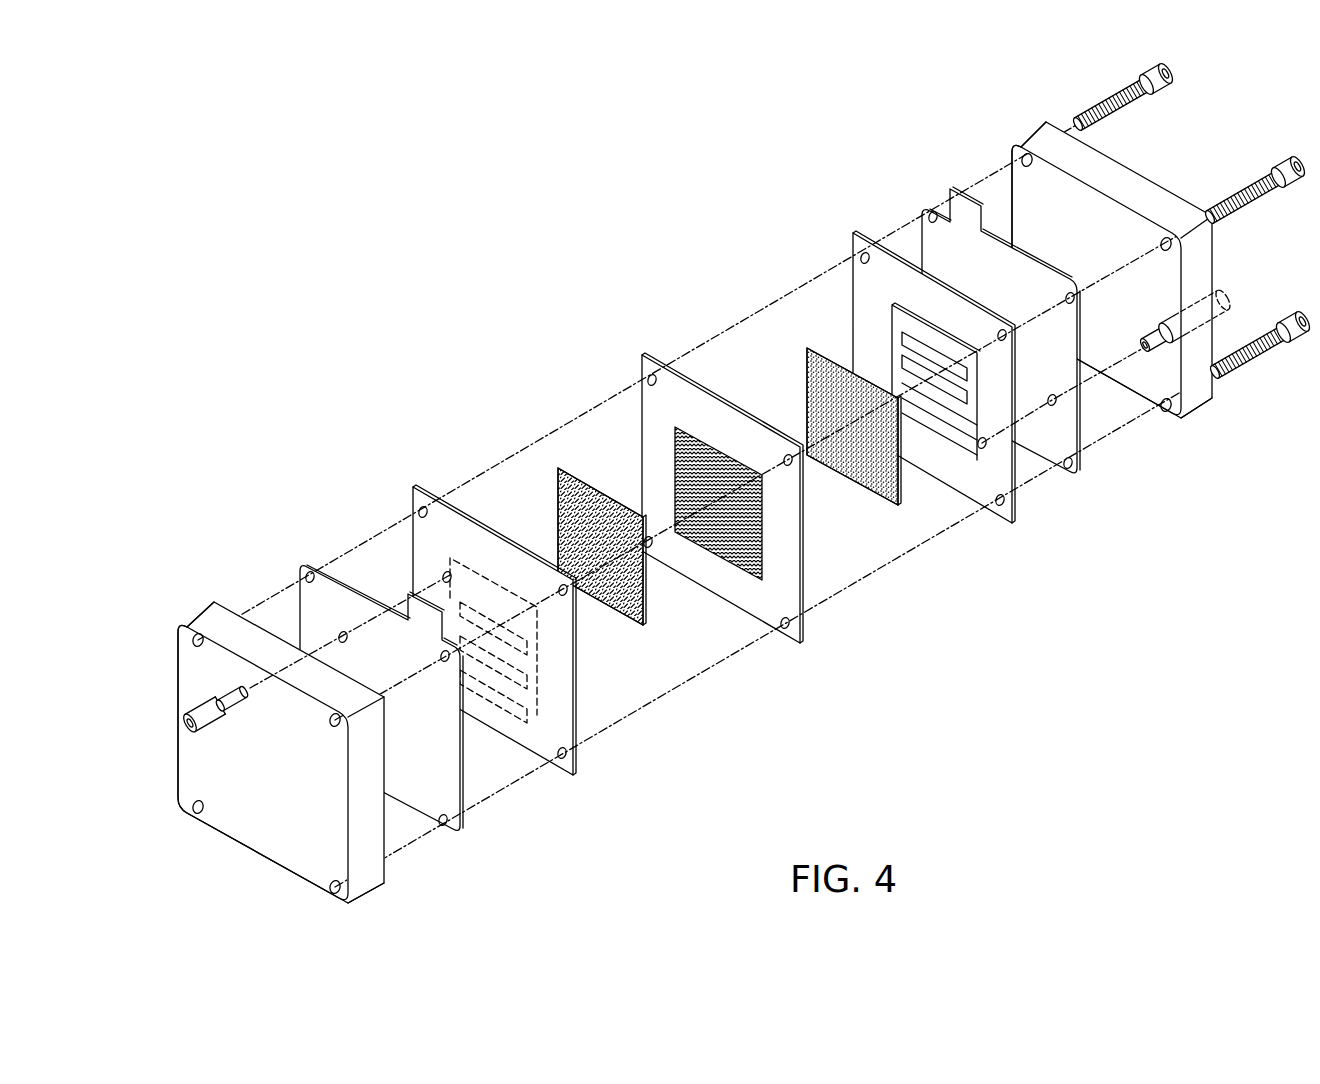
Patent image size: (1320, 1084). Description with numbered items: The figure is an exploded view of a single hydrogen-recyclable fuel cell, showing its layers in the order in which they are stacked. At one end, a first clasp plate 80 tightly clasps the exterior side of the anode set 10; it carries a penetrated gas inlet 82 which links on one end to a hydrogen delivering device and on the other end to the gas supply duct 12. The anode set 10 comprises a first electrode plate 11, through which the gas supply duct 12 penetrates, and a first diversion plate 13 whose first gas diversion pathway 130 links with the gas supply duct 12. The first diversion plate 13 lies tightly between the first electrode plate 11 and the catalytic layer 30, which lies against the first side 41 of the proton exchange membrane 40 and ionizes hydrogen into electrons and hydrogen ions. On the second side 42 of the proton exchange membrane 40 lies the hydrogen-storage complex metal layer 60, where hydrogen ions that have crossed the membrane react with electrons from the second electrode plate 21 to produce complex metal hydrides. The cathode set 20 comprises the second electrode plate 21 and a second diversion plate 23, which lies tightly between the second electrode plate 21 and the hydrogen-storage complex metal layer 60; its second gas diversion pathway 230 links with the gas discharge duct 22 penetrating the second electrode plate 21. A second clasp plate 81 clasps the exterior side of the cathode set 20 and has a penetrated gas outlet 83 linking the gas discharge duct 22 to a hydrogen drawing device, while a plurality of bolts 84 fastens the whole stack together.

The anode set 10 is at (469, 615).
The first electrode plate 11 is at (310, 571).
The gas supply duct 12 is at (444, 575).
The first diversion plate 13 is at (526, 607).
The first gas diversion pathway 130 is at (472, 586).
The cathode set 20 is at (942, 306).
The second electrode plate 21 is at (927, 211).
The gas discharge duct 22 is at (982, 450).
The second diversion plate 23 is at (910, 365).
The second gas diversion pathway 230 is at (947, 422).
The catalytic layer 30 is at (578, 477).
The proton exchange membrane 40 is at (765, 541).
The first side 41 is at (754, 498).
The second side 42 is at (805, 527).
The hydrogen-storage complex metal layer 60 is at (807, 369).
The first clasp plate 80 is at (180, 797).
The second clasp plate 81 is at (1179, 423).
The gas inlet 82 is at (184, 718).
The gas outlet 83 is at (1216, 305).
The bolts 84 is at (1286, 350).